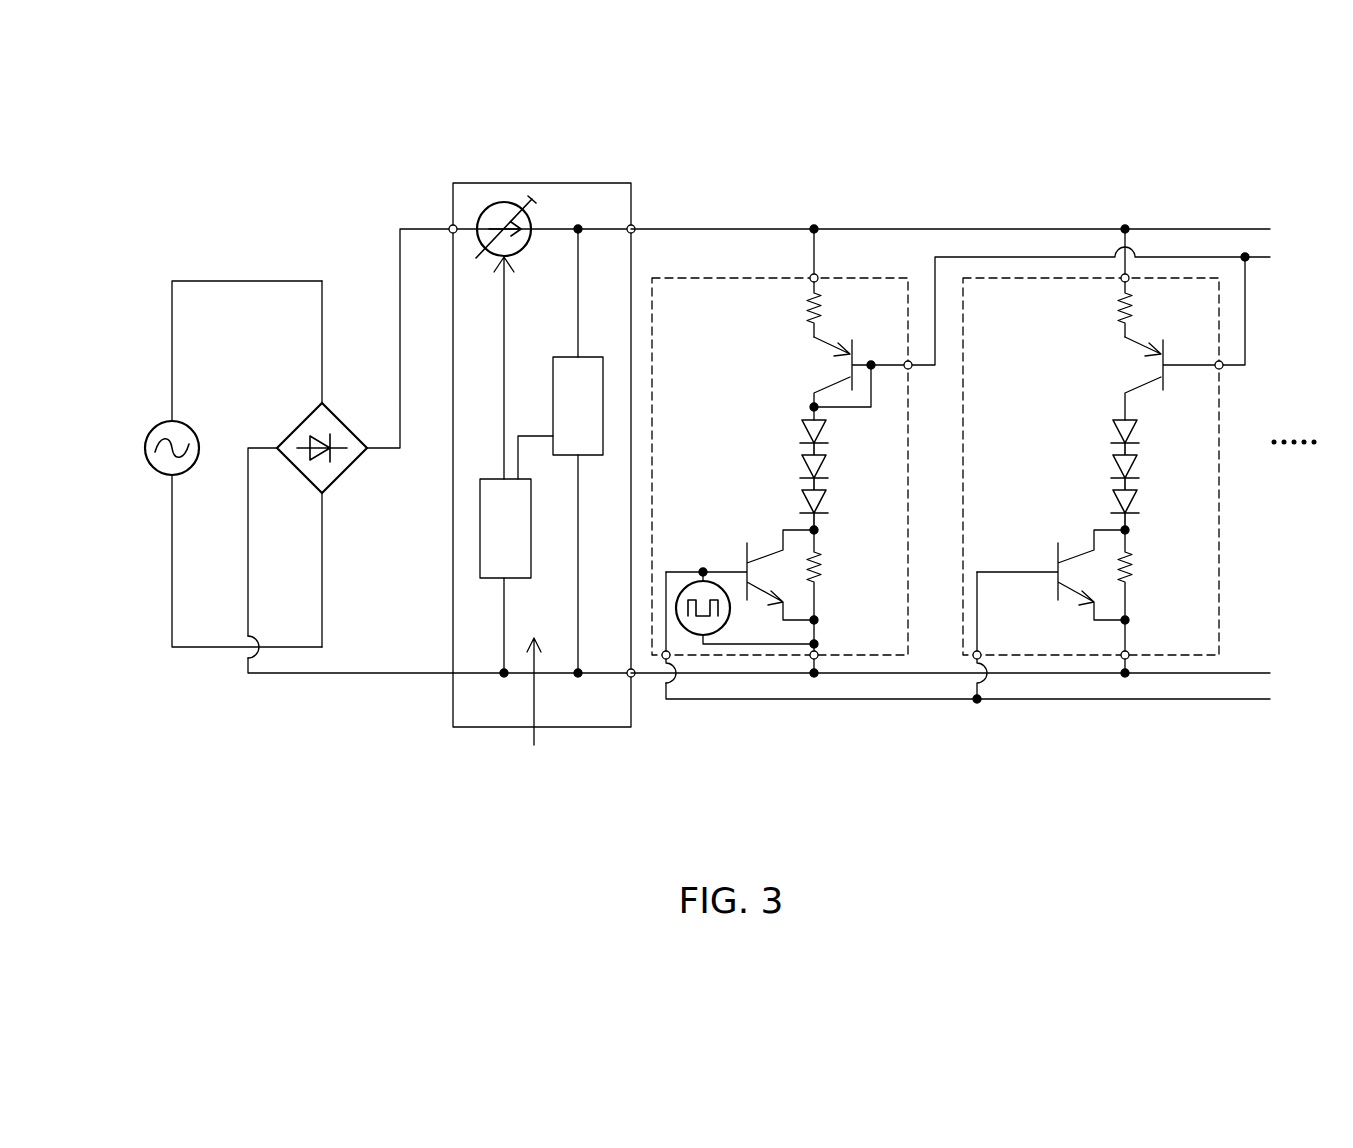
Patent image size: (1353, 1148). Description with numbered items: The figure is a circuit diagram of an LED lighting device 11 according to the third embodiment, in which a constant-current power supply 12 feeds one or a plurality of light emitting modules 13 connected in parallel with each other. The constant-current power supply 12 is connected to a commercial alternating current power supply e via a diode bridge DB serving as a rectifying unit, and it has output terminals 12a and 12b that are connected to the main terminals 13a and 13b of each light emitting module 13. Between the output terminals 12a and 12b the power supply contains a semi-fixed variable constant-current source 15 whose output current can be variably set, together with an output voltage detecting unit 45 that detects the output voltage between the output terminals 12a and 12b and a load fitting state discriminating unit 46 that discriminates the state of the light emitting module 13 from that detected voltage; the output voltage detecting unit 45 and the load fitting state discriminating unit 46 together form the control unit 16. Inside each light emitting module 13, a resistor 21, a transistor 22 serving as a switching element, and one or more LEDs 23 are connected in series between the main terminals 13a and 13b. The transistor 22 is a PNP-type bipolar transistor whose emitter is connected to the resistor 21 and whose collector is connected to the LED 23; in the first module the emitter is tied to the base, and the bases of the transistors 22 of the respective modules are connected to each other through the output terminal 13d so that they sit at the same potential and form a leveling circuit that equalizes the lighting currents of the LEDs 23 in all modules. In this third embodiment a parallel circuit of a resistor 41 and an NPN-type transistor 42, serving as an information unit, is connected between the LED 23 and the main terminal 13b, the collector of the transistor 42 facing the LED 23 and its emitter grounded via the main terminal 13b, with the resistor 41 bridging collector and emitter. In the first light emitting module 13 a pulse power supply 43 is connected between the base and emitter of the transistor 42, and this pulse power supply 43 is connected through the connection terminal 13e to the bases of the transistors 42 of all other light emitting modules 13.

The LED lighting device 11 is at (890, 128).
The constant-current power supply 12 is at (577, 180).
The output terminal 12a is at (635, 230).
The output terminal 12b is at (634, 677).
The light emitting module 13 is at (768, 267).
The main terminal 13a is at (817, 275).
The main terminal 13b is at (818, 660).
The output terminal 13d is at (911, 368).
The connection terminal 13e is at (670, 660).
The semi-fixed variable constant-current source 15 is at (498, 207).
The control unit 16 is at (534, 707).
The resistor 21 is at (821, 310).
The transistor 22 is at (854, 347).
The LED 23 is at (828, 438).
The resistor 41 is at (821, 568).
The transistor 42 is at (746, 553).
The pulse power supply 43 is at (692, 582).
The output voltage detecting unit 45 is at (597, 357).
The load fitting state discriminating unit 46 is at (492, 479).
The commercial alternating current power supply e is at (166, 437).
The diode bridge DB is at (300, 432).